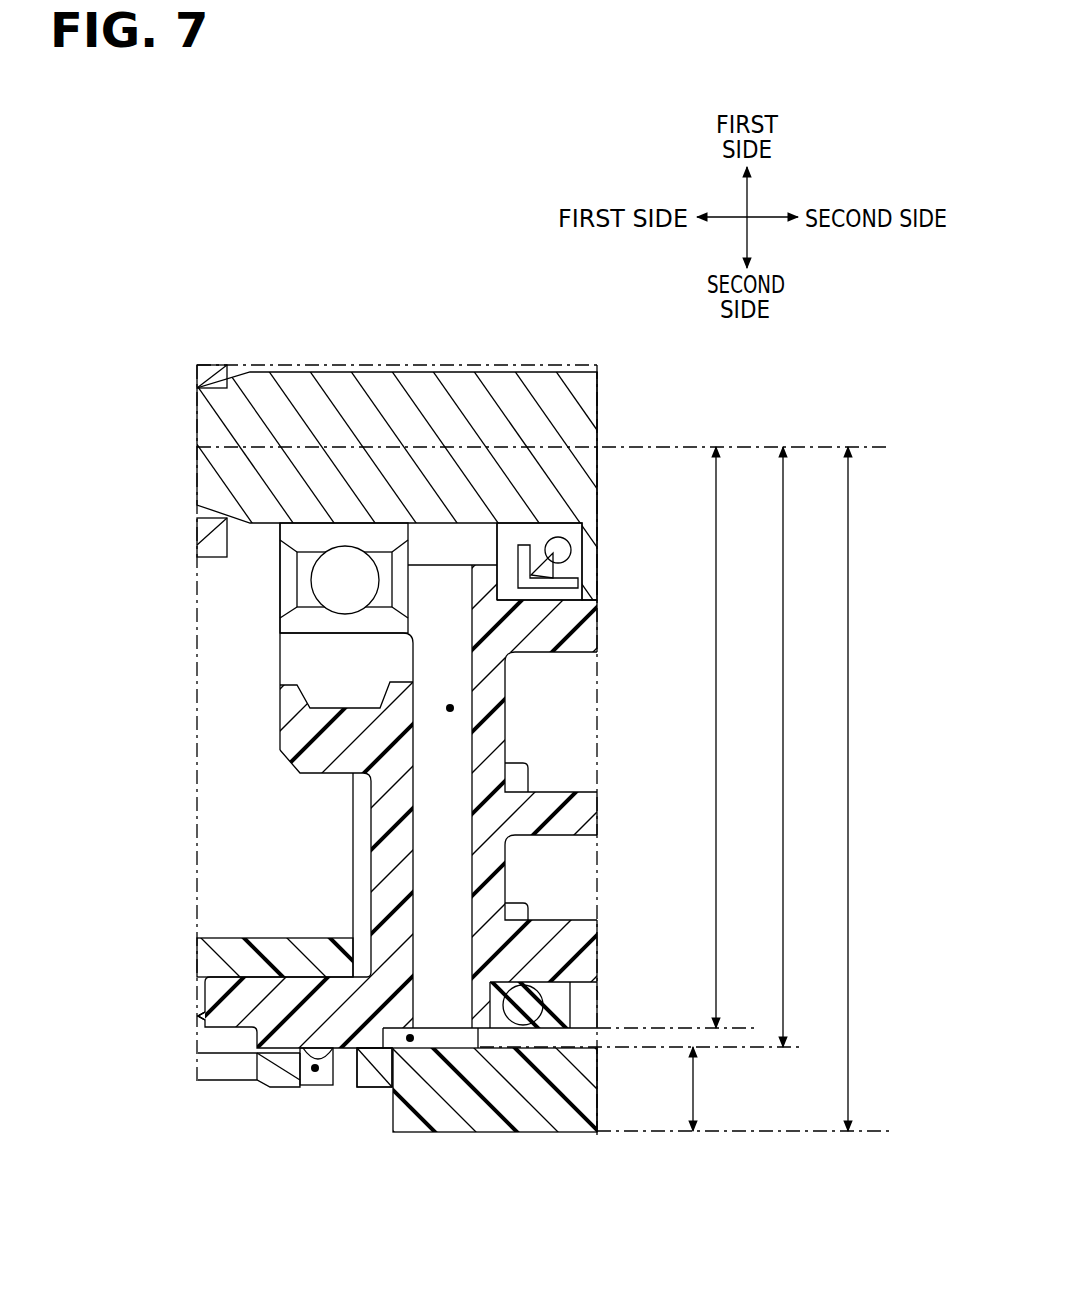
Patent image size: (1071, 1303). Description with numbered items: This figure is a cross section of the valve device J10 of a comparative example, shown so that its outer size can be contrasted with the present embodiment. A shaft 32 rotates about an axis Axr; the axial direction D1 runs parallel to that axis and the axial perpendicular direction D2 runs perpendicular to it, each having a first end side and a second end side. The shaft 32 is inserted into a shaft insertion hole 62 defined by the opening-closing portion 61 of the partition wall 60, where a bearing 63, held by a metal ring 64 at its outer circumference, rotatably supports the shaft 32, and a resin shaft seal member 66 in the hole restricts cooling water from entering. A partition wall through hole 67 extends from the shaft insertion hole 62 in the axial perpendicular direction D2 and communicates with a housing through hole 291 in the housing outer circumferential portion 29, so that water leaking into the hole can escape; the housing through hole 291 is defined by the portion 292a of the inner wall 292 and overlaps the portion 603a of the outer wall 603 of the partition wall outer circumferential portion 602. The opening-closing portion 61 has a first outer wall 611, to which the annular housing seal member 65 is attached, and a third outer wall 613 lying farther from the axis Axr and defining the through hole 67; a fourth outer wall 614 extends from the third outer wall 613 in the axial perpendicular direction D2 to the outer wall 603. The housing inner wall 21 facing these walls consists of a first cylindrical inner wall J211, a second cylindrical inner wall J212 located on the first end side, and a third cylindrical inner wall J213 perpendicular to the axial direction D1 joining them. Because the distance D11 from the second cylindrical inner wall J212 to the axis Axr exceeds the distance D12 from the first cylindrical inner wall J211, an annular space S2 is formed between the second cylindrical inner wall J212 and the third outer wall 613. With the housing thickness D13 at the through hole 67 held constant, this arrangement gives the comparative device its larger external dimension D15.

The valve device J10 is at (150, 352).
The shaft 32 is at (472, 398).
The axis Axr is at (567, 447).
The shaft insertion hole 62 is at (437, 537).
The shaft seal member 66 is at (553, 567).
The bearing 63 is at (345, 580).
The metal ring 64 is at (328, 665).
The partition wall 60 is at (590, 637).
The partition wall through hole 67 is at (450, 708).
The opening-closing portion 61 is at (547, 803).
The fourth outer wall 614 is at (385, 938).
The third outer wall 613 is at (422, 1030).
The partition wall outer circumferential portion 602 is at (283, 1007).
The outer wall 603 is at (200, 1018).
The portion of the outer wall 603a is at (201, 1016).
The housing inner wall 21 is at (590, 980).
The first outer wall 611 is at (590, 1000).
The housing seal member 65 is at (523, 1020).
The housing outer circumferential portion 29 is at (278, 1077).
The housing through hole 291 is at (315, 1070).
The inner wall 292 is at (343, 1060).
The portion of the inner wall 292a is at (374, 1067).
The annular space S2 is at (397, 1053).
The second cylindrical inner wall J212 is at (420, 1037).
The third cylindrical inner wall J213 is at (470, 1045).
The first cylindrical inner wall J211 is at (565, 1015).
The axial direction D1 is at (772, 220).
The axial perpendicular direction D2 is at (747, 197).
The distance D11 is at (812, 747).
The distance D12 is at (747, 737).
The thickness D13 is at (695, 1090).
The external dimension D15 is at (850, 820).